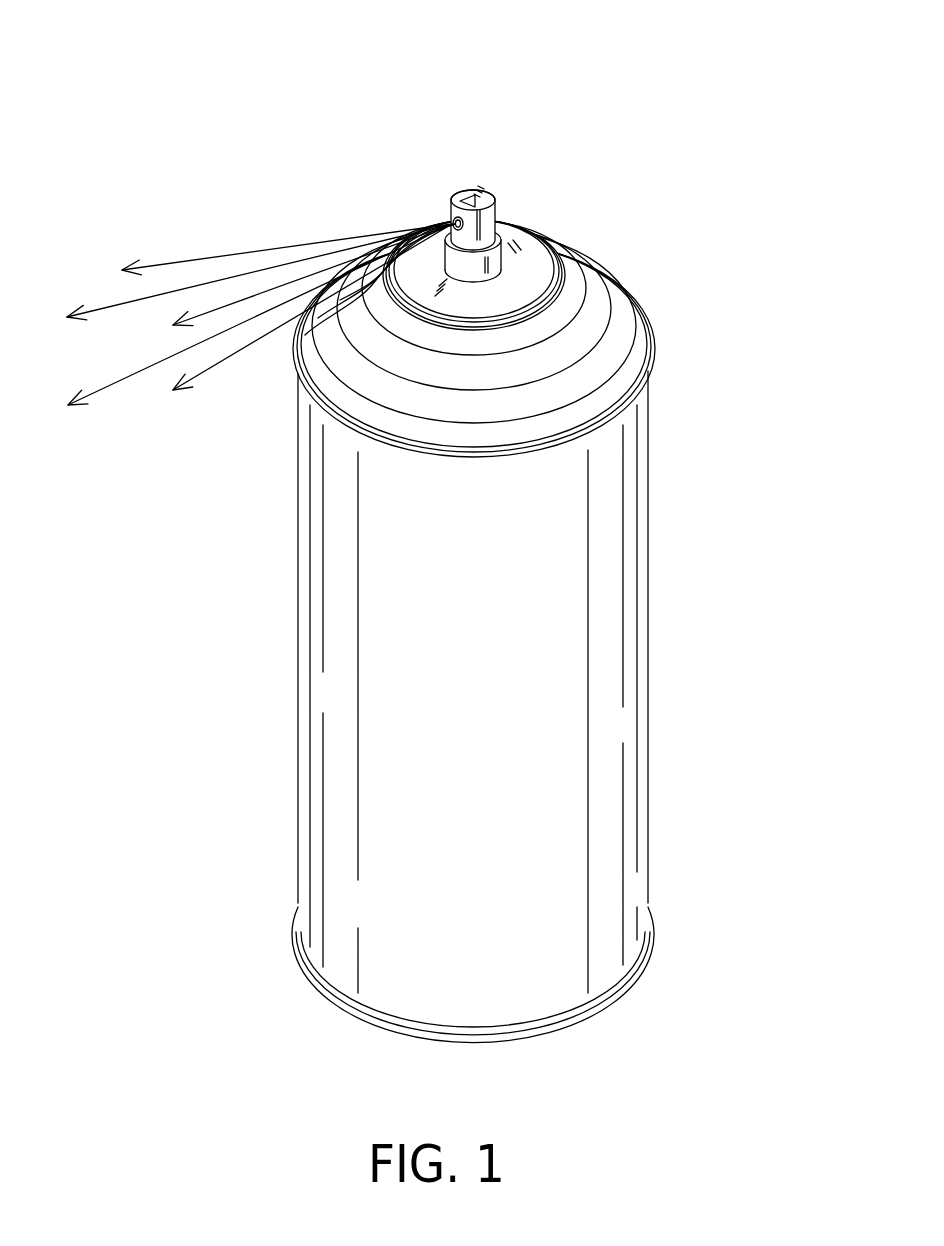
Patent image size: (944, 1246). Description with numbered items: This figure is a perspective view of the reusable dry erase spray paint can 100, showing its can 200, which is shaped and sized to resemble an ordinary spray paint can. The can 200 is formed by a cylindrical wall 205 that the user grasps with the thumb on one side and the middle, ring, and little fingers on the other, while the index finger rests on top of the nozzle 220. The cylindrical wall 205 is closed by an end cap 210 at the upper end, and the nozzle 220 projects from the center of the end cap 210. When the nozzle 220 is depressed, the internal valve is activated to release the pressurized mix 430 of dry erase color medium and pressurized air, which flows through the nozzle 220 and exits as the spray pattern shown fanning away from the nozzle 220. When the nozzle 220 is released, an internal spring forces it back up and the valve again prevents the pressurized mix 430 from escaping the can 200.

The reusable dry erase spray paint can 100 is at (449, 525).
The can 200 is at (475, 574).
The cylindrical wall 205 is at (384, 683).
The end cap 210 is at (594, 312).
The nozzle 220 is at (511, 194).
The pressurized mix 430 is at (227, 278).